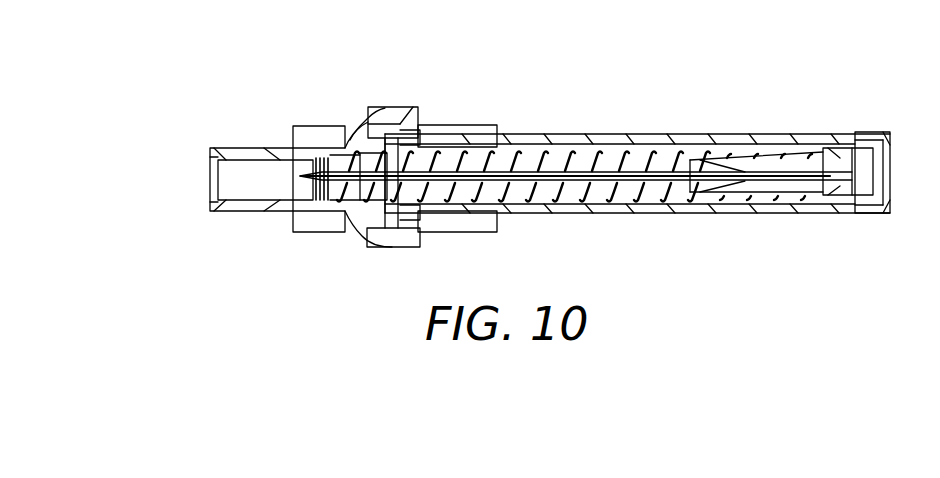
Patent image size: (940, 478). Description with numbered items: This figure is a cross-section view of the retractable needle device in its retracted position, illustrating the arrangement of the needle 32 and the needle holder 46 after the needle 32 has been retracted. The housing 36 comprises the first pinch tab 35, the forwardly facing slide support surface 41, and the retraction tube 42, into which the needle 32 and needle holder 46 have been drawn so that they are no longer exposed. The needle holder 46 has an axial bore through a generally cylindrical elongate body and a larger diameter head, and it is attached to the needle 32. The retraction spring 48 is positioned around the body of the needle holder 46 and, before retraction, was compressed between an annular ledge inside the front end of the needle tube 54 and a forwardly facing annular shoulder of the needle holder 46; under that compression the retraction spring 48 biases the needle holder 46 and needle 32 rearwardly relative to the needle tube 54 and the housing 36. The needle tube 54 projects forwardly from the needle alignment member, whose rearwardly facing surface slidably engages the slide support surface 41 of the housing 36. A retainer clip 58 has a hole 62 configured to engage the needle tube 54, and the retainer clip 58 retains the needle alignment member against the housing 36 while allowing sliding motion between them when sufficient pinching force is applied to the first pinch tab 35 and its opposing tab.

The needle 32 is at (587, 150).
The first pinch tab 35 is at (308, 133).
The housing 36 is at (400, 213).
The slide support surface 41 is at (372, 135).
The retraction tube 42 is at (605, 215).
The needle holder 46 is at (768, 163).
The retraction spring 48 is at (655, 150).
The needle tube 54 is at (245, 208).
The retainer clip 58 is at (392, 113).
The hole 62 is at (408, 132).